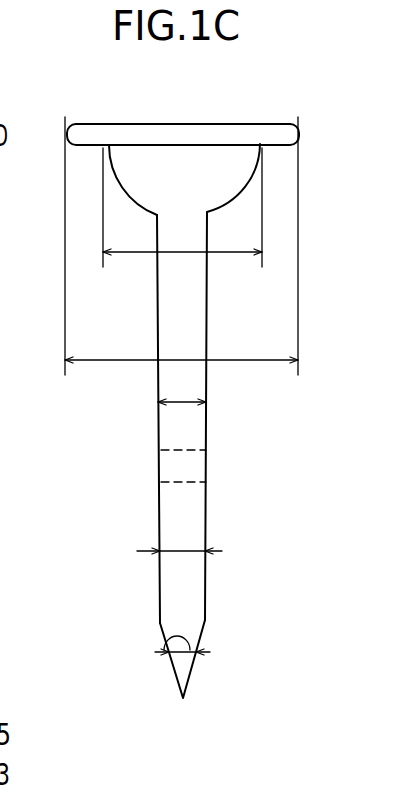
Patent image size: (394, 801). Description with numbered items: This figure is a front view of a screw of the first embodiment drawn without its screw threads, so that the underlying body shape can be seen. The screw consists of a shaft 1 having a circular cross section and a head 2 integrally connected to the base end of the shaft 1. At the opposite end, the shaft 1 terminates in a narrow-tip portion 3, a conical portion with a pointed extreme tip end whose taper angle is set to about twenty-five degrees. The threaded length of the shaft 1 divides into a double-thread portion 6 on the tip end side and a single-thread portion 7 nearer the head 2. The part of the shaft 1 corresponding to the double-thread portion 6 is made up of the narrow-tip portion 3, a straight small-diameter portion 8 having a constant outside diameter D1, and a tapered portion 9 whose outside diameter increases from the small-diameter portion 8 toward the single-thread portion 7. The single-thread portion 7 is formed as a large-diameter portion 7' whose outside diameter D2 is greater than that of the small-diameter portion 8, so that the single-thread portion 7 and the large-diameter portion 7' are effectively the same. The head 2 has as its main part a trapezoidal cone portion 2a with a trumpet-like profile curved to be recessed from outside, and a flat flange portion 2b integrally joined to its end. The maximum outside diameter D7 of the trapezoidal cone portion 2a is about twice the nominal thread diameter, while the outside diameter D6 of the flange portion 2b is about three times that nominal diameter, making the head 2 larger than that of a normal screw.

The shaft 1 is at (157, 385).
The head 2 is at (266, 118).
The trapezoidal cone portion 2a is at (157, 181).
The flange portion 2b is at (111, 133).
The narrow-tip portion 3 is at (223, 628).
The double-thread portion 6 is at (264, 451).
The single-thread portion 7 is at (240, 339).
The large-diameter portion 7' is at (235, 398).
The small-diameter portion 8 is at (223, 478).
The tapered portion 9 is at (168, 468).
The outside diameter of small-diameter portion D1 is at (178, 549).
The outside diameter of large-diameter portion D2 is at (180, 403).
The outside diameter of head D6 is at (184, 359).
The outside diameter of trapezoidal cone portion D7 is at (178, 253).